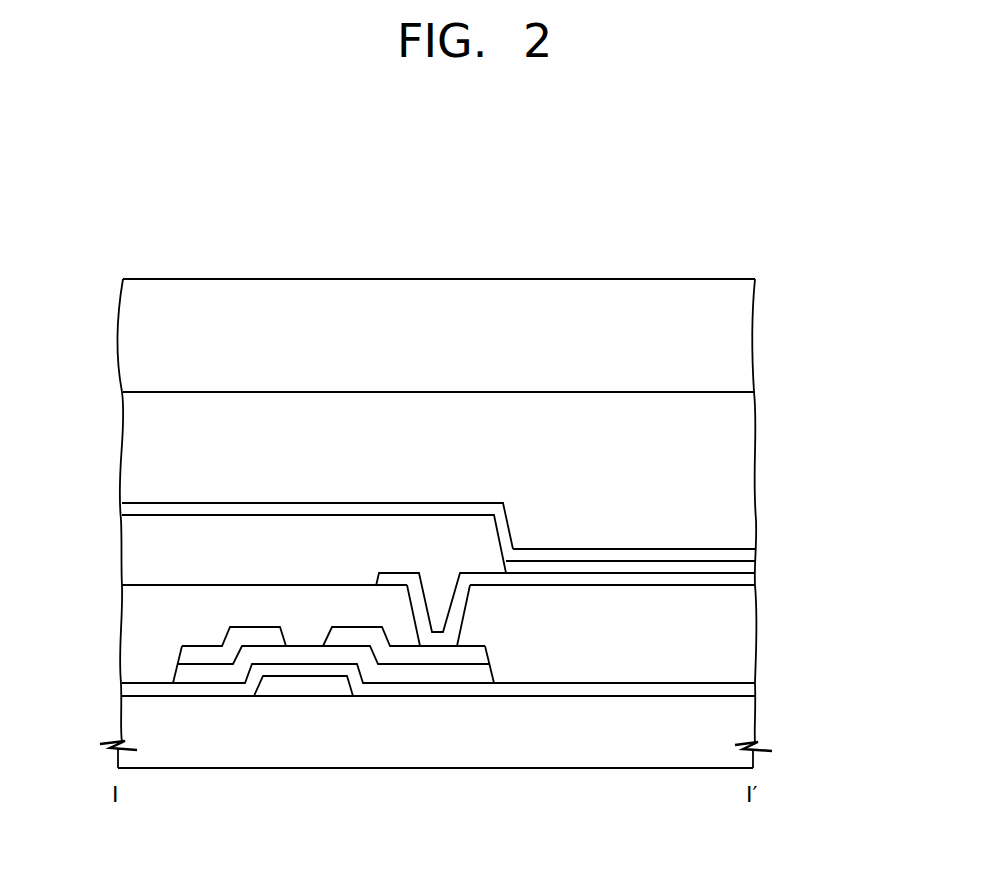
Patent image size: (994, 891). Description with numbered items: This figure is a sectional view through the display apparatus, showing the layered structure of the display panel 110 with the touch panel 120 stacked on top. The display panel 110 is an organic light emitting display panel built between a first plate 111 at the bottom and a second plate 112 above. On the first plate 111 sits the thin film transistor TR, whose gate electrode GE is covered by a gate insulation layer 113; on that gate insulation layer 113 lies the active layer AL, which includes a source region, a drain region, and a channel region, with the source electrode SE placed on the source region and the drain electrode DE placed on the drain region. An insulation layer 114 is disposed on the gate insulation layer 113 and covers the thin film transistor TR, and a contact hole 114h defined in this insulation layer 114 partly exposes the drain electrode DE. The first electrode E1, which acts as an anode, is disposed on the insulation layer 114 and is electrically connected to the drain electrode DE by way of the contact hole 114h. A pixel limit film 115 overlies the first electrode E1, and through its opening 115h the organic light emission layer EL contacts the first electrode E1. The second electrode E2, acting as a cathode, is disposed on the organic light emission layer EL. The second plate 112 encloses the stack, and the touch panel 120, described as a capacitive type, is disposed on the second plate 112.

The display panel 110 is at (837, 450).
The first plate 111 is at (745, 733).
The second plate 112 is at (743, 460).
The gate insulation layer 113 is at (745, 688).
The insulation layer 114 is at (745, 634).
The contact hole 114h is at (460, 615).
The pixel limit film 115 is at (127, 542).
The opening 115h is at (498, 538).
The touch panel 120 is at (743, 334).
The first electrode E1 is at (743, 579).
The organic light emission layer EL is at (745, 567).
The second electrode E2 is at (747, 556).
The thin film transistor TR is at (420, 833).
The gate electrode GE is at (318, 687).
The active layer AL is at (277, 657).
The source electrode SE is at (212, 657).
The drain electrode DE is at (394, 657).